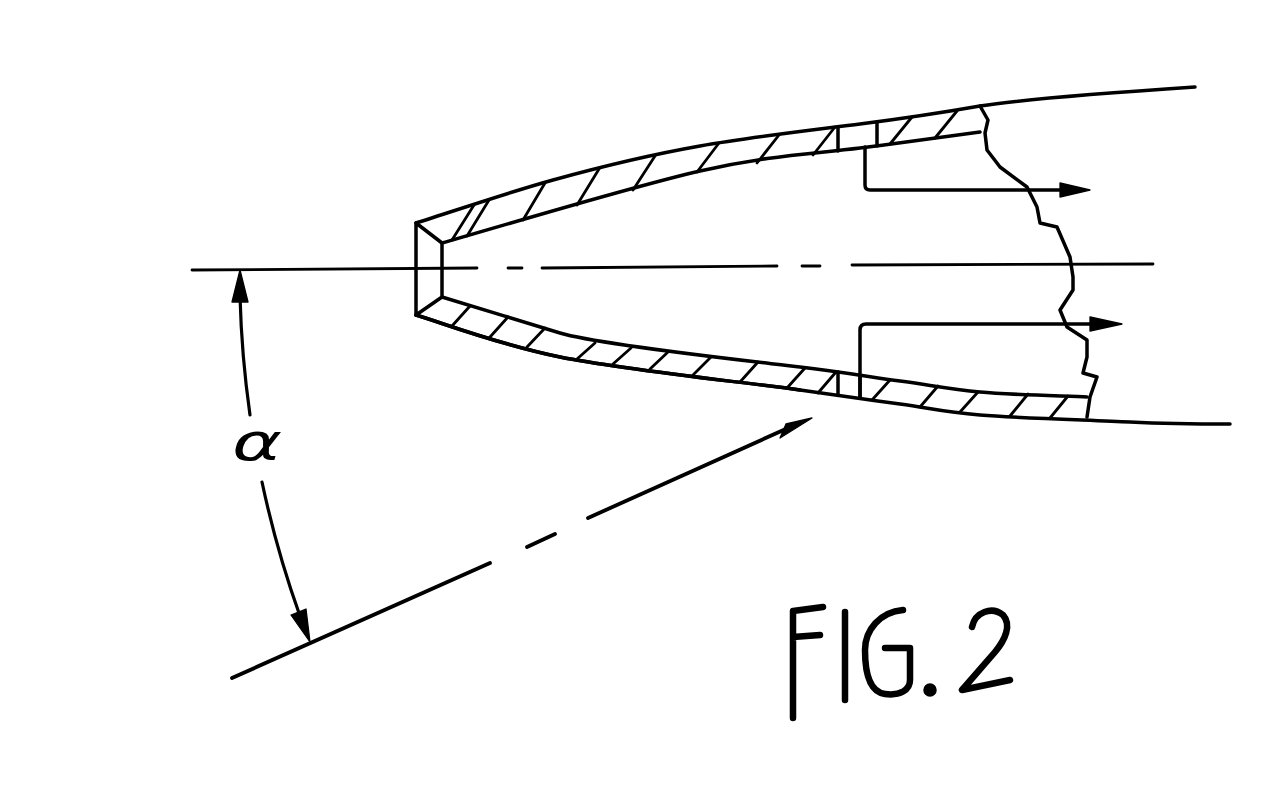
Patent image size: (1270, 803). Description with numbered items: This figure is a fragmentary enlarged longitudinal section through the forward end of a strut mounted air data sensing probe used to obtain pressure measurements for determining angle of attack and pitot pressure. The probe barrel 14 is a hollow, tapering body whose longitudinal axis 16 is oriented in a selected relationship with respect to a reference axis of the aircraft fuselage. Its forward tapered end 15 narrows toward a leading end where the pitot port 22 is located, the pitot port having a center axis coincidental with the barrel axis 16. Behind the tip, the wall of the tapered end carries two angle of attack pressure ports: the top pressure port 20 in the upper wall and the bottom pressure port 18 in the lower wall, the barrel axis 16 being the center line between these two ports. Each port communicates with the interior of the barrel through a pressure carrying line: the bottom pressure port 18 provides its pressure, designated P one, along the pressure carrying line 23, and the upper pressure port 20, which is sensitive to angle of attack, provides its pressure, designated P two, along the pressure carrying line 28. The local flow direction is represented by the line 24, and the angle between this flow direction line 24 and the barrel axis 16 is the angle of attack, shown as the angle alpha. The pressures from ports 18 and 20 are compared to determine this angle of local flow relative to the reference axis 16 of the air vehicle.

The probe barrel 14 is at (990, 417).
The forward tapered end 15 is at (610, 366).
The longitudinal axis 16 is at (1127, 265).
The bottom angle of attack pressure port 18 is at (855, 400).
The top angle of attack pressure port 20 is at (860, 122).
The pitot port 22 is at (413, 253).
The pressure carrying line 23 is at (918, 327).
The flow direction line 24 is at (405, 600).
The pressure carrying line 28 is at (910, 193).